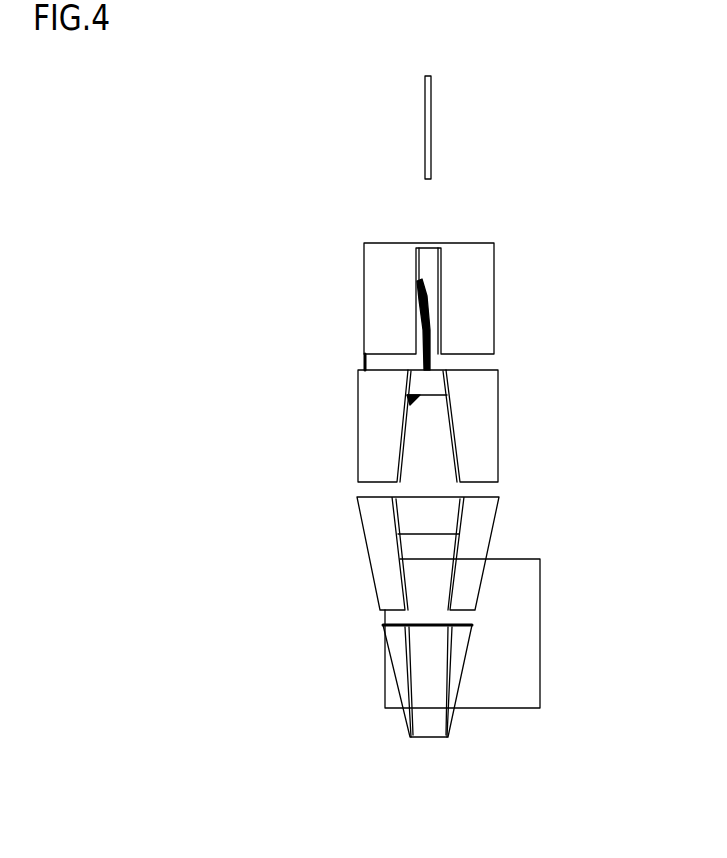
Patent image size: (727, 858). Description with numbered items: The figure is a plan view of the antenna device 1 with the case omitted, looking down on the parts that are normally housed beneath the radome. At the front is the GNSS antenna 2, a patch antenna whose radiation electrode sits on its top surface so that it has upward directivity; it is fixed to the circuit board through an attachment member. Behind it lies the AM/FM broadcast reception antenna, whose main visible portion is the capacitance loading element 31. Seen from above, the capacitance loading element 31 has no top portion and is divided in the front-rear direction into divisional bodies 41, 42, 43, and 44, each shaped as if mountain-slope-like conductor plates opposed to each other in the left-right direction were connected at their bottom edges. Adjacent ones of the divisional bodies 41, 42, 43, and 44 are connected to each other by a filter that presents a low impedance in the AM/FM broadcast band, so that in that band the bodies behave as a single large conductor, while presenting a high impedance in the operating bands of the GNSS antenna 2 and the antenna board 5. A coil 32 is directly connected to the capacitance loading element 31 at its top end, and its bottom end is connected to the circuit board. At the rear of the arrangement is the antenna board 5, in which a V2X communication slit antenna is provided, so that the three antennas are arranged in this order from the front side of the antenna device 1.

The antenna device 1 is at (153, 816).
The GNSS antenna 2 is at (520, 707).
The antenna board 5 is at (428, 96).
The capacitance loading element 31 is at (441, 362).
The coil 32 is at (430, 312).
The divisional body 41 is at (388, 645).
The divisional body 42 is at (366, 548).
The divisional body 43 is at (358, 428).
The divisional body 44 is at (363, 302).